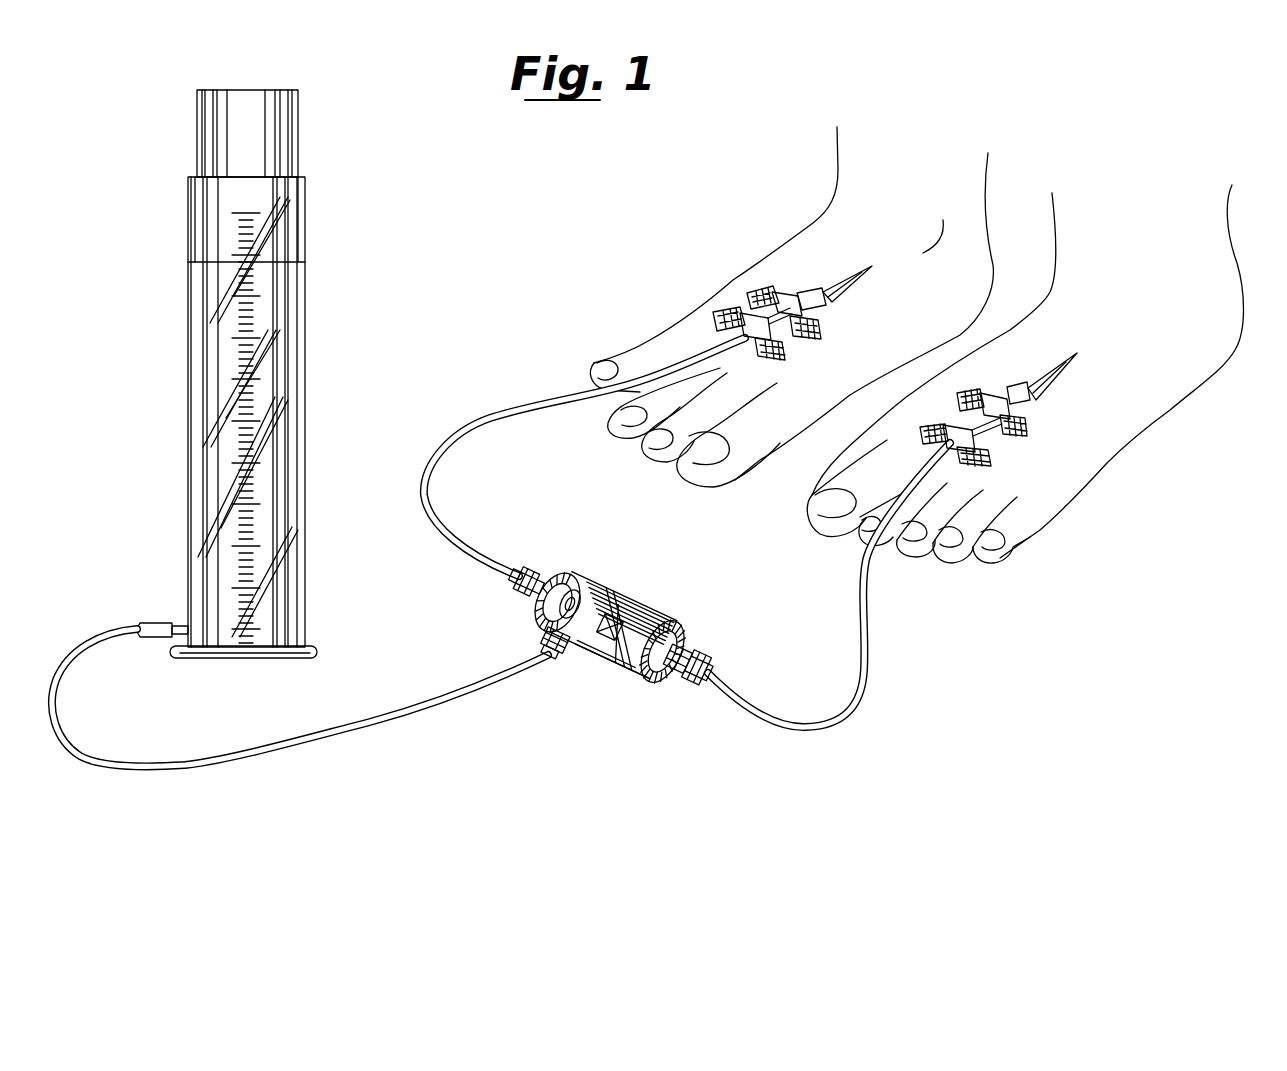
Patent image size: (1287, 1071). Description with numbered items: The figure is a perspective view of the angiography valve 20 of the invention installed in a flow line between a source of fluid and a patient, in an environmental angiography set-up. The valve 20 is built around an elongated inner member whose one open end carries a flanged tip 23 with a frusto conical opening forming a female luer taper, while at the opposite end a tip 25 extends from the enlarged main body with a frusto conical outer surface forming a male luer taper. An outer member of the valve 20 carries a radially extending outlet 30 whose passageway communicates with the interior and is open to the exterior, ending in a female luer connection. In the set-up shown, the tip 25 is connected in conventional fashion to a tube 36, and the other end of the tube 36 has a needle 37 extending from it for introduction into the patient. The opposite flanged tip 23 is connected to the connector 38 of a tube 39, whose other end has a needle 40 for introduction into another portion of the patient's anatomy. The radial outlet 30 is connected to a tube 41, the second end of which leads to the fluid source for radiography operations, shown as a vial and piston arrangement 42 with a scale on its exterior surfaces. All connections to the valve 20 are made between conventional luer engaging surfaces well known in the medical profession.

The valve 20 is at (644, 584).
The flanged tip 23 is at (690, 650).
The tip 25 is at (548, 572).
The radially extending outlet 30 is at (572, 655).
The tube 36 is at (428, 487).
The needle 37 is at (820, 292).
The connector 38 is at (712, 670).
The tube 39 is at (758, 698).
The needle 40 is at (1030, 383).
The tube 41 is at (485, 677).
The vial and piston arrangement 42 is at (298, 598).